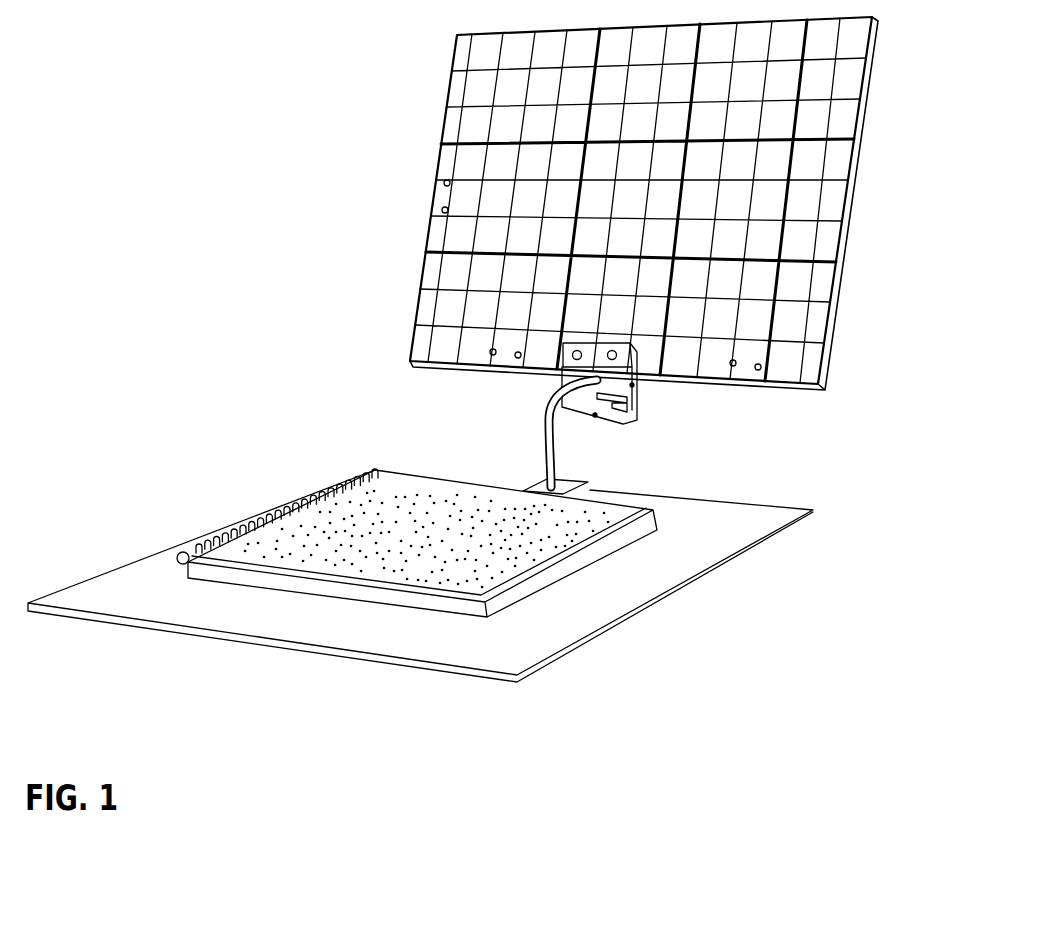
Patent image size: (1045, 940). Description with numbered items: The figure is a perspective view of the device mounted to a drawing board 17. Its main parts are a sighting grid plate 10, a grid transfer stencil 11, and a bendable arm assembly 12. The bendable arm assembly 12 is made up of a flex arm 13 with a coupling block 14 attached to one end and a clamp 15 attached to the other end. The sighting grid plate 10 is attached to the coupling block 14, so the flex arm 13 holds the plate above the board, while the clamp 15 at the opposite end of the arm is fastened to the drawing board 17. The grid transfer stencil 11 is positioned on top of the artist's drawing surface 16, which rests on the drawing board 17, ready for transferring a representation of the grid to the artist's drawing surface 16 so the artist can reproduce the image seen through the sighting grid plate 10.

The sighting grid plate 10 is at (443, 115).
The grid transfer stencil 11 is at (543, 557).
The bendable arm assembly 12 is at (537, 452).
The flex arm 13 is at (542, 413).
The coupling block 14 is at (642, 410).
The clamp 15 is at (593, 477).
The artist's drawing surface 16 is at (525, 582).
The drawing board 17 is at (527, 643).